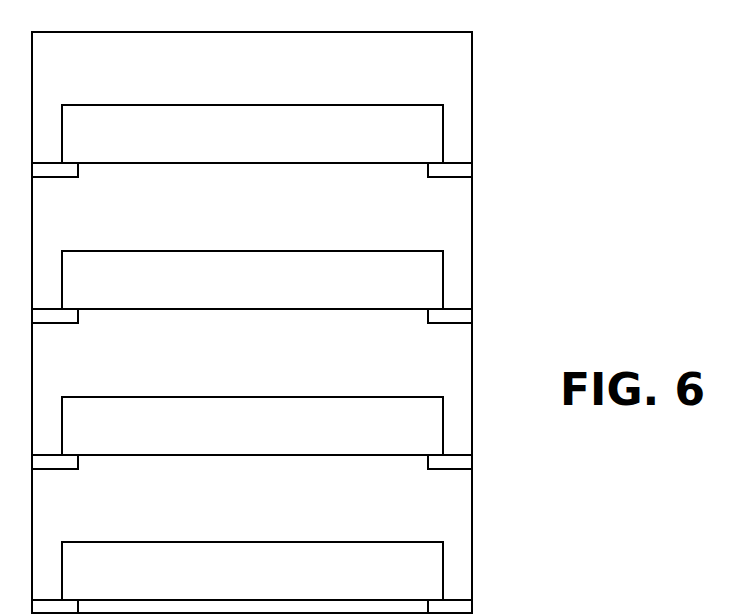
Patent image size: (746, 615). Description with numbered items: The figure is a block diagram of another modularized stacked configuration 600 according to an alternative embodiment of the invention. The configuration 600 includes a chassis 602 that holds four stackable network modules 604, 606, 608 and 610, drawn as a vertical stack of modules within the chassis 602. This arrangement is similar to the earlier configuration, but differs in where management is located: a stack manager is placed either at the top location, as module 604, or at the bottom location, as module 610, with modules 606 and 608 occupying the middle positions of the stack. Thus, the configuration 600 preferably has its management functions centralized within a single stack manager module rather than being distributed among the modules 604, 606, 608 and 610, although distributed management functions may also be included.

The modularized stacked configuration 600 is at (592, 277).
The chassis 602 is at (472, 137).
The stackable network module 604 is at (252, 134).
The stackable network module 606 is at (252, 280).
The stackable network module 608 is at (252, 426).
The stackable network module 610 is at (252, 571).